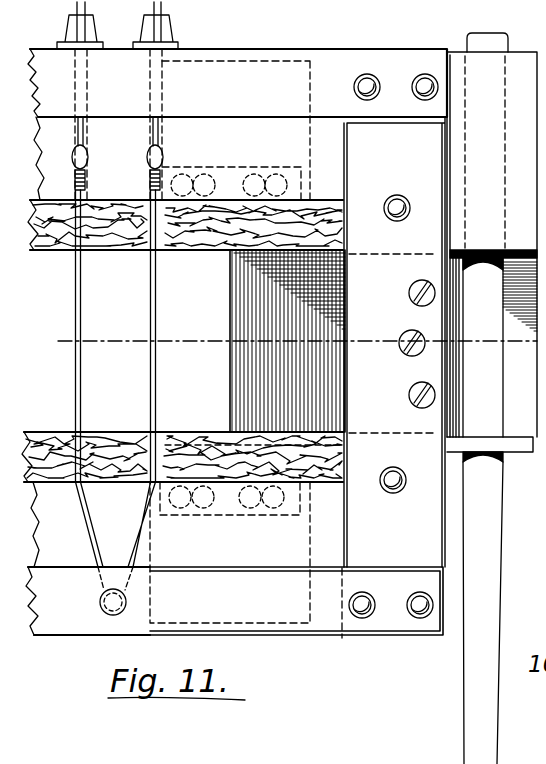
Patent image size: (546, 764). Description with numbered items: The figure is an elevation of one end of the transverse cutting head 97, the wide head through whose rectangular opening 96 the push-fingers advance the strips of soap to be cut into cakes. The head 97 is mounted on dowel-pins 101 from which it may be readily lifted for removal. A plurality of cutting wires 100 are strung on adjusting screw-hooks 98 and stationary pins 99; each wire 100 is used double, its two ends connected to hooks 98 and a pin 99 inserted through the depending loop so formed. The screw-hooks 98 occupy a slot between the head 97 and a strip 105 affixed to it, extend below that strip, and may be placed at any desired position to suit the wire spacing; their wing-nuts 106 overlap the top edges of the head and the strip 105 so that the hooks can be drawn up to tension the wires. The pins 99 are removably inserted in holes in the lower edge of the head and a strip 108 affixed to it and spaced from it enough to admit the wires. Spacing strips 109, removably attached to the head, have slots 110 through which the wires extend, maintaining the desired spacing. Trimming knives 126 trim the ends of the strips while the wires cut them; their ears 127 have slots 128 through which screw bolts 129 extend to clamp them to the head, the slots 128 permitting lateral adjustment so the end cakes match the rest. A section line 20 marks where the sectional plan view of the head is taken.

The section line 20 is at (282, 339).
The rectangular opening 96 is at (107, 270).
The cutting head 97 is at (65, 637).
The screw-hooks 98 is at (87, 136).
The stationary pins 99 is at (100, 606).
The cutting wires 100 is at (73, 378).
The dowel-pins 101 is at (495, 493).
The strip 105 is at (328, 58).
The wing-nuts 106 is at (166, 31).
The strip 108 is at (328, 626).
The spacing strips 109 is at (199, 243).
The slots 110 is at (65, 246).
The trimming knives 126 is at (230, 318).
The ears 127 is at (305, 553).
The slots 128 is at (243, 517).
The screw bolts 129 is at (192, 179).